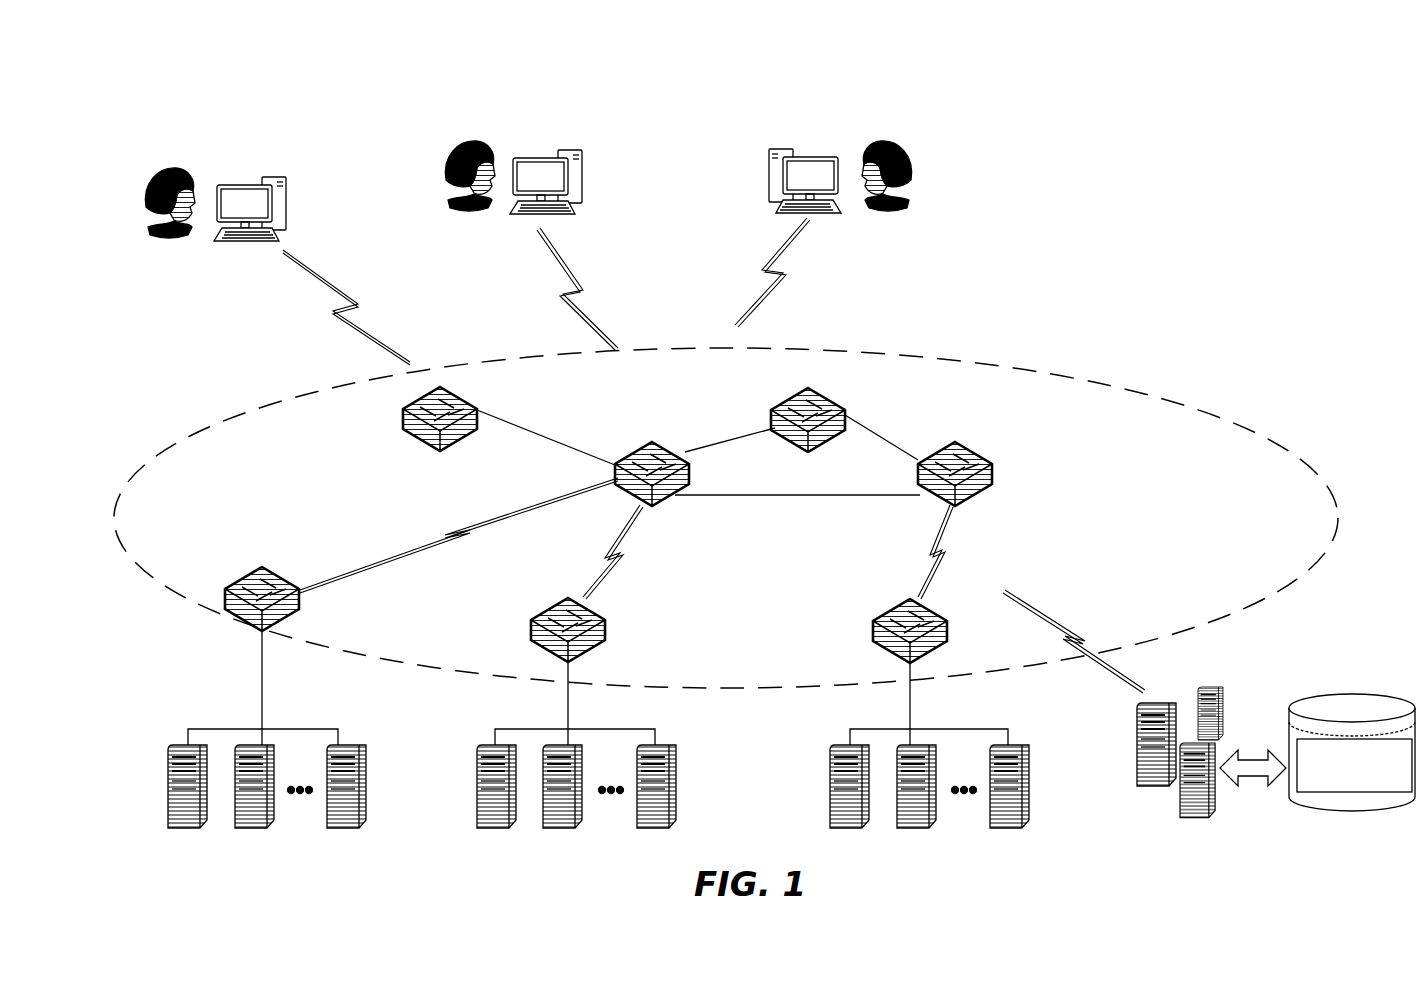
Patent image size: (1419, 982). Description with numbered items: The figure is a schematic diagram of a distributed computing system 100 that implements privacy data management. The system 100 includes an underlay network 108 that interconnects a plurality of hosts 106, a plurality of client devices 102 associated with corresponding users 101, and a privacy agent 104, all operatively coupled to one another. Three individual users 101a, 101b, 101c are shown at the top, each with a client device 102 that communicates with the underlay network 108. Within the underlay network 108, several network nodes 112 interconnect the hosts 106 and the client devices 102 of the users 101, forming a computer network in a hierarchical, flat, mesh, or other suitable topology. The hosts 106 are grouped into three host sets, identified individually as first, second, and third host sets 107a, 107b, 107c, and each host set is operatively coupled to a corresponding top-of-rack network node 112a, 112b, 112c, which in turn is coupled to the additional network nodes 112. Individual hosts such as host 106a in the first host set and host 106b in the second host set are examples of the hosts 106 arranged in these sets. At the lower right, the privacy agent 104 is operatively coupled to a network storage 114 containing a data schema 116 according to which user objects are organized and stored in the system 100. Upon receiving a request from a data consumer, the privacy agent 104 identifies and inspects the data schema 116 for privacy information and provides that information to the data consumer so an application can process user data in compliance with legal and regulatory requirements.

The distributed computing system 100 is at (1262, 122).
The users 101 is at (242, 64).
The user 101a is at (121, 171).
The user 101b is at (411, 141).
The user 101c is at (937, 141).
The client devices 102 is at (260, 177).
The privacy agent 104 is at (1173, 783).
The hosts 106 is at (129, 781).
The host 106a is at (170, 747).
The host 106b is at (665, 746).
The first host set 107a is at (121, 691).
The second host set 107b is at (471, 711).
The third host set 107c is at (1038, 721).
The underlay network 108 is at (726, 520).
The network nodes 112 is at (406, 403).
The top-of-rack network node 112a is at (231, 576).
The top-of-rack network node 112b is at (559, 601).
The top-of-rack network node 112c is at (936, 601).
The network storage 114 is at (1330, 695).
The data schema 116 is at (1355, 792).